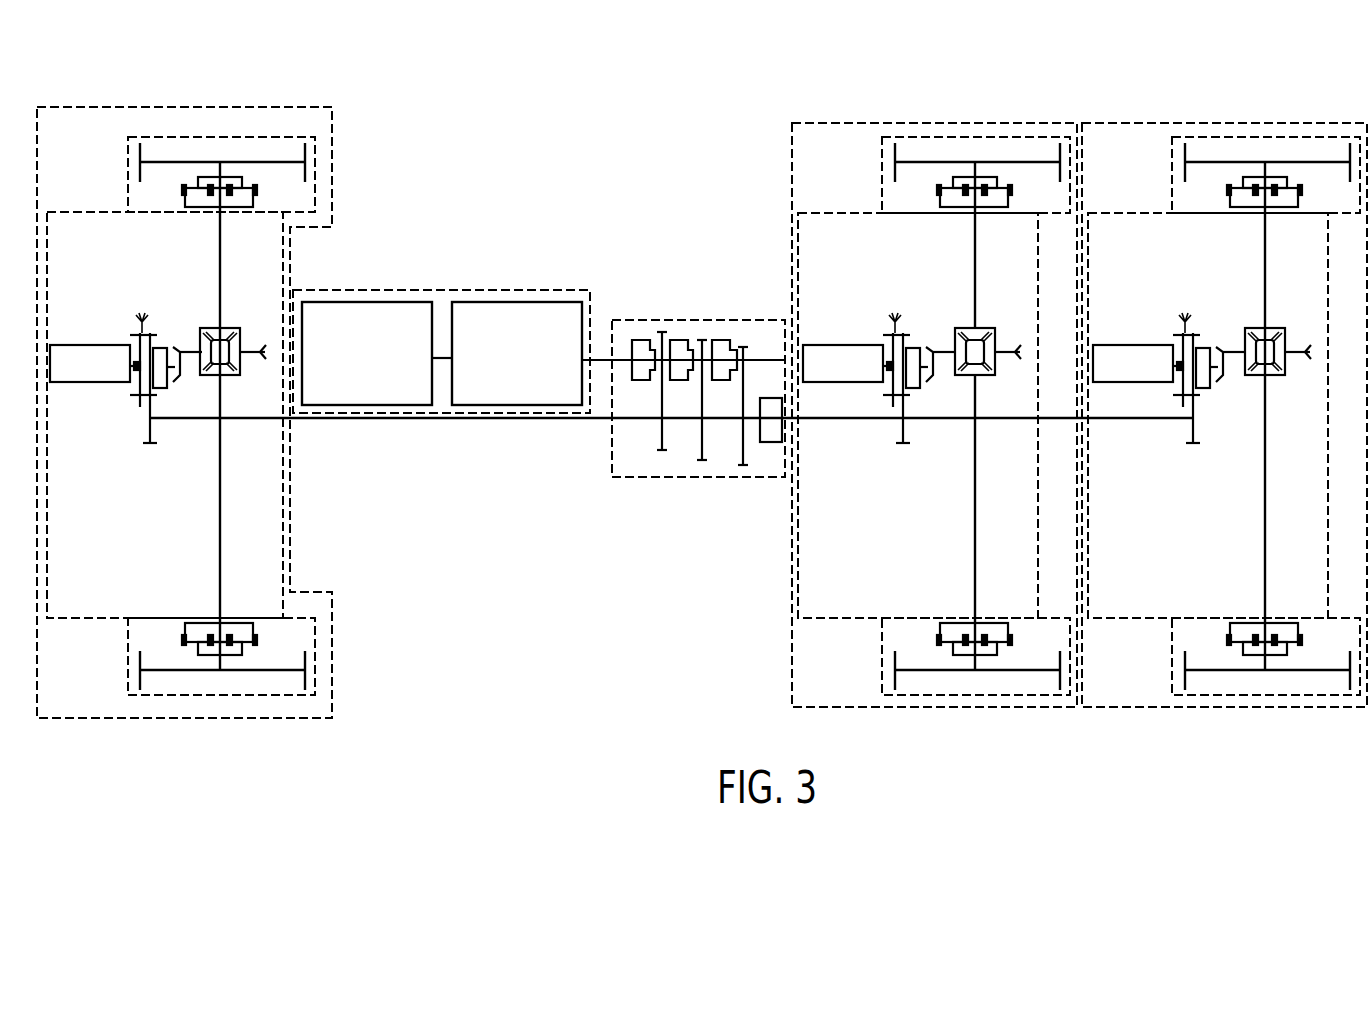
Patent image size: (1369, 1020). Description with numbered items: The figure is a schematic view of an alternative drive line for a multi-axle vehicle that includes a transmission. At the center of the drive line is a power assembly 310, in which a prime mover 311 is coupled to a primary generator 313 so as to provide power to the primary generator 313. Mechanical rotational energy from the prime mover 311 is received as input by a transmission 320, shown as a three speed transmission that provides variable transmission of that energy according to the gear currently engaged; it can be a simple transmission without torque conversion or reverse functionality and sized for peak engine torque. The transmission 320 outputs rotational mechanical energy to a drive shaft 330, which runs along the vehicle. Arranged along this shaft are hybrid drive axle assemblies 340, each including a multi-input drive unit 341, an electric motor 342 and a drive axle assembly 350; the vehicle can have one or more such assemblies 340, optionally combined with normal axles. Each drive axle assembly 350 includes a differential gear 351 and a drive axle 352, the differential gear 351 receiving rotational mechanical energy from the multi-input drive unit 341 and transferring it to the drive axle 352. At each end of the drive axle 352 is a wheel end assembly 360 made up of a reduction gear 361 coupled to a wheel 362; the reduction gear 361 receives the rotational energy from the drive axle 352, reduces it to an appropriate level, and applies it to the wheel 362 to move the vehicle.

The power assembly 310 is at (539, 323).
The prime mover 311 is at (367, 302).
The primary generator 313 is at (517, 302).
The transmission 320 is at (700, 320).
The drive shaft 330 is at (553, 418).
The hybrid drive axle assembly 340 is at (188, 105).
The multi-input drive unit 341 is at (907, 326).
The electric motor 342 is at (842, 345).
The drive axle assembly 350 is at (985, 322).
The differential gear 351 is at (955, 325).
The drive axle 352 is at (980, 400).
The wheel end assembly 360 is at (317, 173).
The reduction gear 361 is at (1010, 633).
The wheel 362 is at (1023, 670).